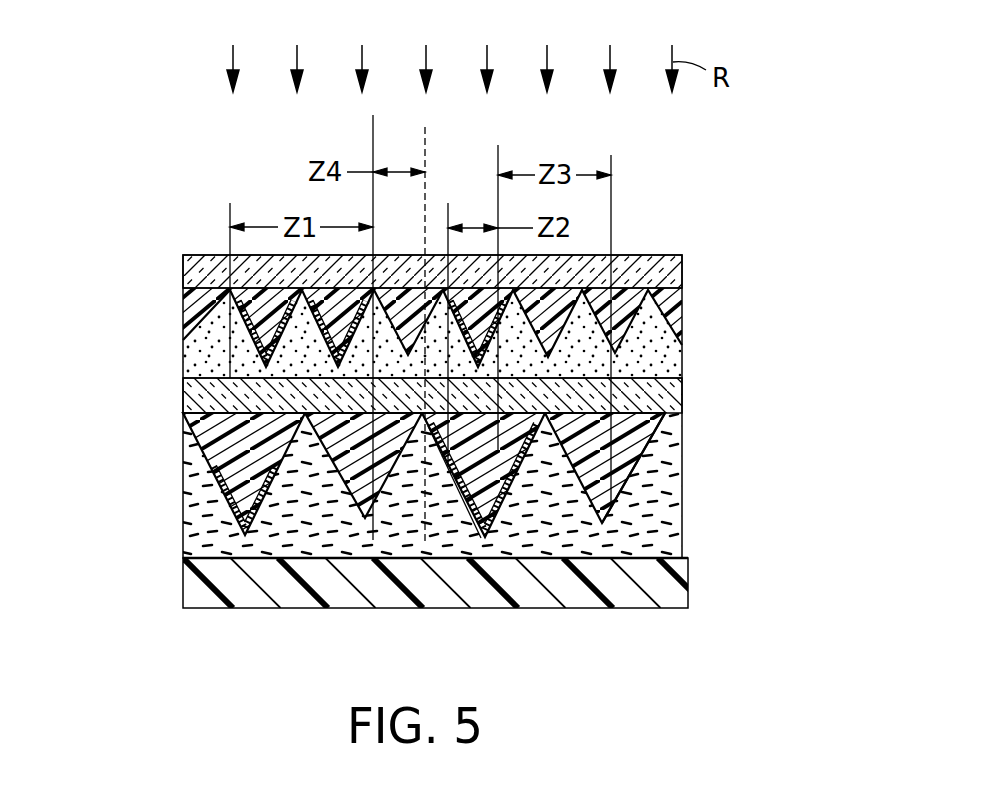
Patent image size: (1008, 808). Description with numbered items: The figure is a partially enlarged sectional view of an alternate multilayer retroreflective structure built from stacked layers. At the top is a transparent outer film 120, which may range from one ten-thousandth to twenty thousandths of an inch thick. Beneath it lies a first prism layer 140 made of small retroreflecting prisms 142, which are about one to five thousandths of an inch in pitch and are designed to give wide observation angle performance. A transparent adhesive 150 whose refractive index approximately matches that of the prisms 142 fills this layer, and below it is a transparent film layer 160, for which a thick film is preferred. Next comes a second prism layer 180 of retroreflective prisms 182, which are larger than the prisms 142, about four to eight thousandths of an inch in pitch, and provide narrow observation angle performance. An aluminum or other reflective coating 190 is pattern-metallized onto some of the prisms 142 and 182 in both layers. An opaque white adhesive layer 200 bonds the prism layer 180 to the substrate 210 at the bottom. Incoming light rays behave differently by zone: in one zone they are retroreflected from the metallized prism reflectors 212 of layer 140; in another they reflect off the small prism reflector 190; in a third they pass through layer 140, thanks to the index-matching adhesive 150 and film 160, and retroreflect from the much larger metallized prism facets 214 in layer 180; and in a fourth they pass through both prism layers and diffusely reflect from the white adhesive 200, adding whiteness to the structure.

The transparent top film 120 is at (183, 272).
The first prism layer 140 is at (183, 318).
The retroreflecting prisms 142 is at (630, 293).
The transparent adhesive layer 150 is at (210, 367).
The transparent film layer 160 is at (190, 397).
The second prism layer 180 is at (203, 442).
The retroreflective prisms 182 is at (637, 470).
The reflective coating 190 is at (220, 498).
The opaque white adhesive layer 200 is at (197, 534).
The substrate 210 is at (187, 582).
The metallized prism reflectors 212 is at (218, 340).
The metallized prism facets 214 is at (470, 500).